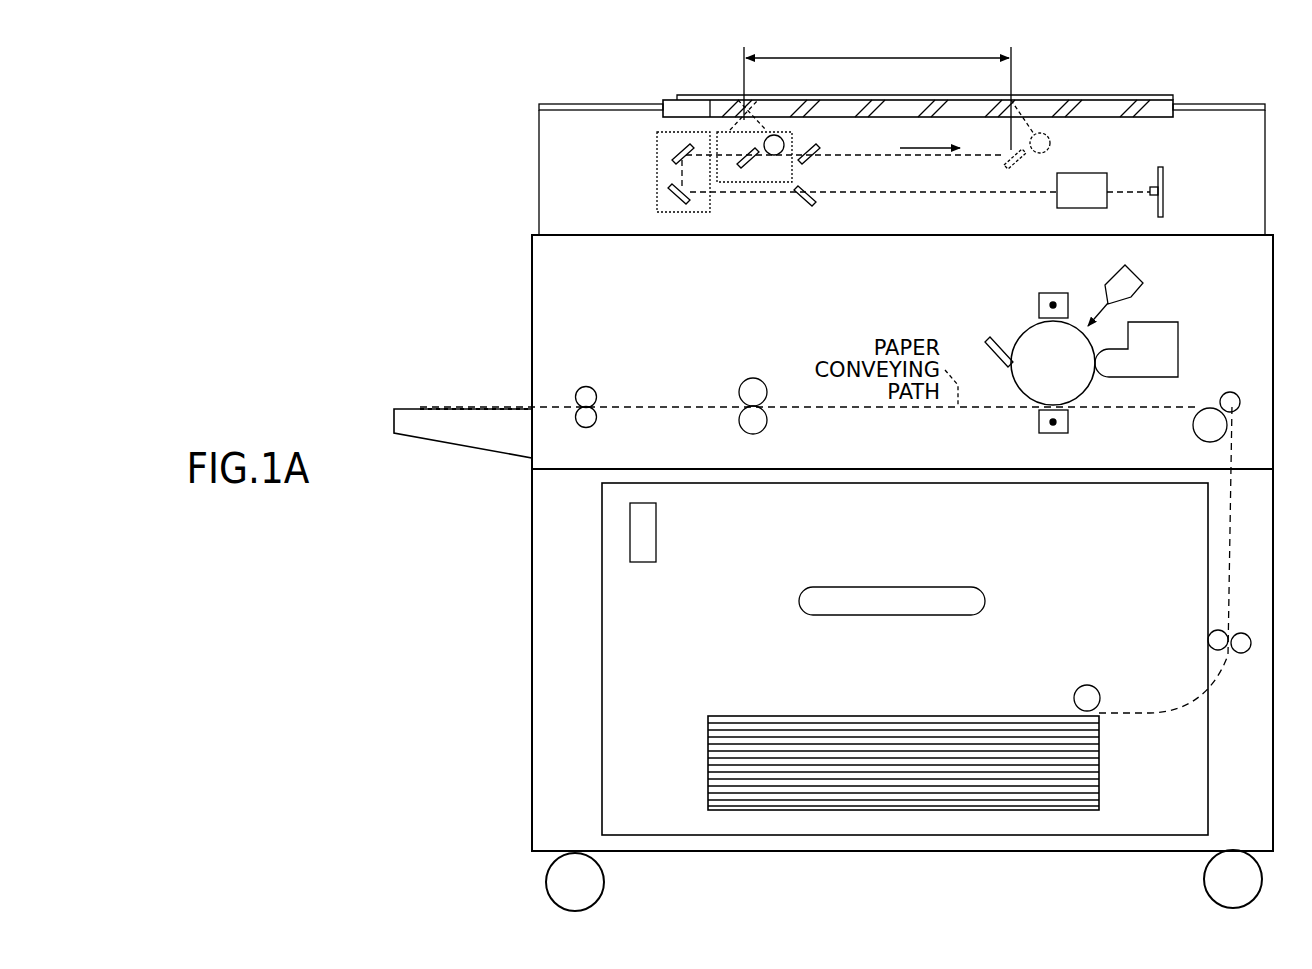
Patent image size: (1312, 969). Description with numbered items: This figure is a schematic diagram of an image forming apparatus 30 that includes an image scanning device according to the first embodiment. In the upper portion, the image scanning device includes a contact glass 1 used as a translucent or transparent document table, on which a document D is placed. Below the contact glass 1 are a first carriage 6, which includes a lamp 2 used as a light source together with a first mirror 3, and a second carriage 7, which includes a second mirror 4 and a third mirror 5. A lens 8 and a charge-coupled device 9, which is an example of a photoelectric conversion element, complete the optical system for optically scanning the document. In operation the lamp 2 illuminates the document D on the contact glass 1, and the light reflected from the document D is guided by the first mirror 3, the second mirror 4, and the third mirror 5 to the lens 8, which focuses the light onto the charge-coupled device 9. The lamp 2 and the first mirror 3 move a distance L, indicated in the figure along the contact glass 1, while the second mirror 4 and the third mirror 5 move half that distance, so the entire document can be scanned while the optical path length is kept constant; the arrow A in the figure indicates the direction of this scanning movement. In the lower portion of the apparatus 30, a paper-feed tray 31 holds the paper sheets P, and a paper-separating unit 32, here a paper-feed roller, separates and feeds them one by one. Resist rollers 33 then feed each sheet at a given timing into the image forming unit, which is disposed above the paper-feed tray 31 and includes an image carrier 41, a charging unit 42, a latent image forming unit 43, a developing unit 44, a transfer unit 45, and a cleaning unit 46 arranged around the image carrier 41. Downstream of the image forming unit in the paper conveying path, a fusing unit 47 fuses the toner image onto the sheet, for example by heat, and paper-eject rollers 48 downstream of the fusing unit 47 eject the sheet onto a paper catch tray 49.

The contact glass 1 is at (1073, 100).
The document D is at (1117, 95).
The distance L is at (877, 93).
The lamp 2 is at (774, 155).
The first mirror 3 is at (745, 168).
The second mirror 4 is at (675, 153).
The third mirror 5 is at (675, 195).
The first carriage 6 is at (720, 130).
The second carriage 7 is at (672, 130).
The lens 8 is at (1090, 208).
The charge-coupled device (CCD) 9 is at (1165, 172).
The scanning direction A is at (930, 135).
The image forming apparatus 30 is at (990, 862).
The paper-feed tray 31 is at (602, 628).
The paper-separating unit 32 is at (1088, 685).
The resist rollers 33 is at (1200, 440).
The image carrier 41 is at (1085, 395).
The charging unit 42 is at (1039, 305).
The latent image forming unit 43 is at (1145, 288).
The developing unit 44 is at (1180, 355).
The transfer unit 45 is at (1039, 422).
The cleaning unit 46 is at (987, 340).
The fusing unit 47 is at (752, 378).
The paper-eject rollers 48 is at (583, 386).
The paper catch tray 49 is at (420, 409).
The paper P is at (885, 716).